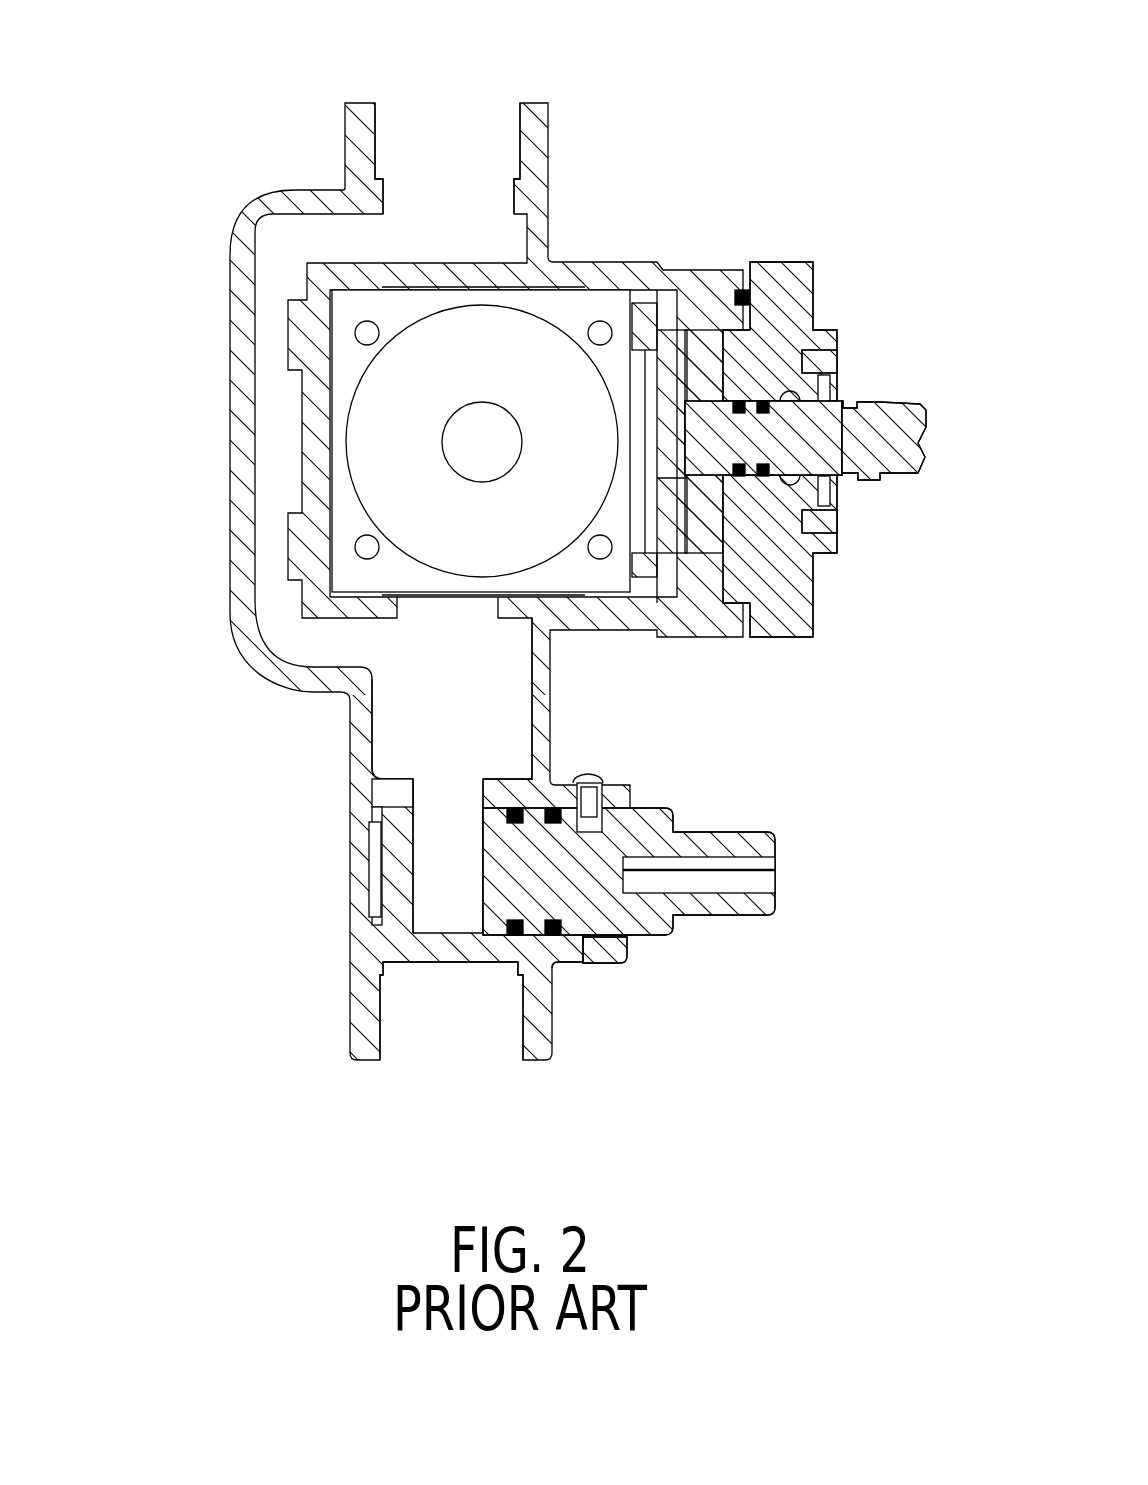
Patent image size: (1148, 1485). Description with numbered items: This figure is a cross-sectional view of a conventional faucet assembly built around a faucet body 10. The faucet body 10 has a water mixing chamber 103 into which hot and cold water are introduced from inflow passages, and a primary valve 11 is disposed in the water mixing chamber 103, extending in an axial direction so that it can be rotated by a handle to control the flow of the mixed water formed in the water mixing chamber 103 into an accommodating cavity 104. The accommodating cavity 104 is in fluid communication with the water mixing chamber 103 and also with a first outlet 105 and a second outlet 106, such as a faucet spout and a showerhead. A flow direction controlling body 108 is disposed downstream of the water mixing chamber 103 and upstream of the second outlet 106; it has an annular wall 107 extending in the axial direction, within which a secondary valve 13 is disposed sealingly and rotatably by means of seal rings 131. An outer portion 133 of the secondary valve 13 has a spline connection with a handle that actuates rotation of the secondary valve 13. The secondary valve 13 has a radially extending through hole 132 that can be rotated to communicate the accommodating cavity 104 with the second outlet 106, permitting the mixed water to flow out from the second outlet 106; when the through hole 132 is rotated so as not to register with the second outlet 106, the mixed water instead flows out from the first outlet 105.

The faucet body 10 is at (203, 434).
The primary valve 11 is at (553, 352).
The secondary valve 13 is at (730, 840).
The water mixing chamber 103 is at (635, 273).
The accommodating cavity 104 is at (507, 672).
The first outlet 105 is at (453, 125).
The second outlet 106 is at (492, 1033).
The annular wall 107 is at (620, 952).
The flow direction controlling body 108 is at (583, 937).
The seal rings 131 is at (553, 807).
The through hole 132 is at (432, 885).
The outer portion 133 is at (768, 882).